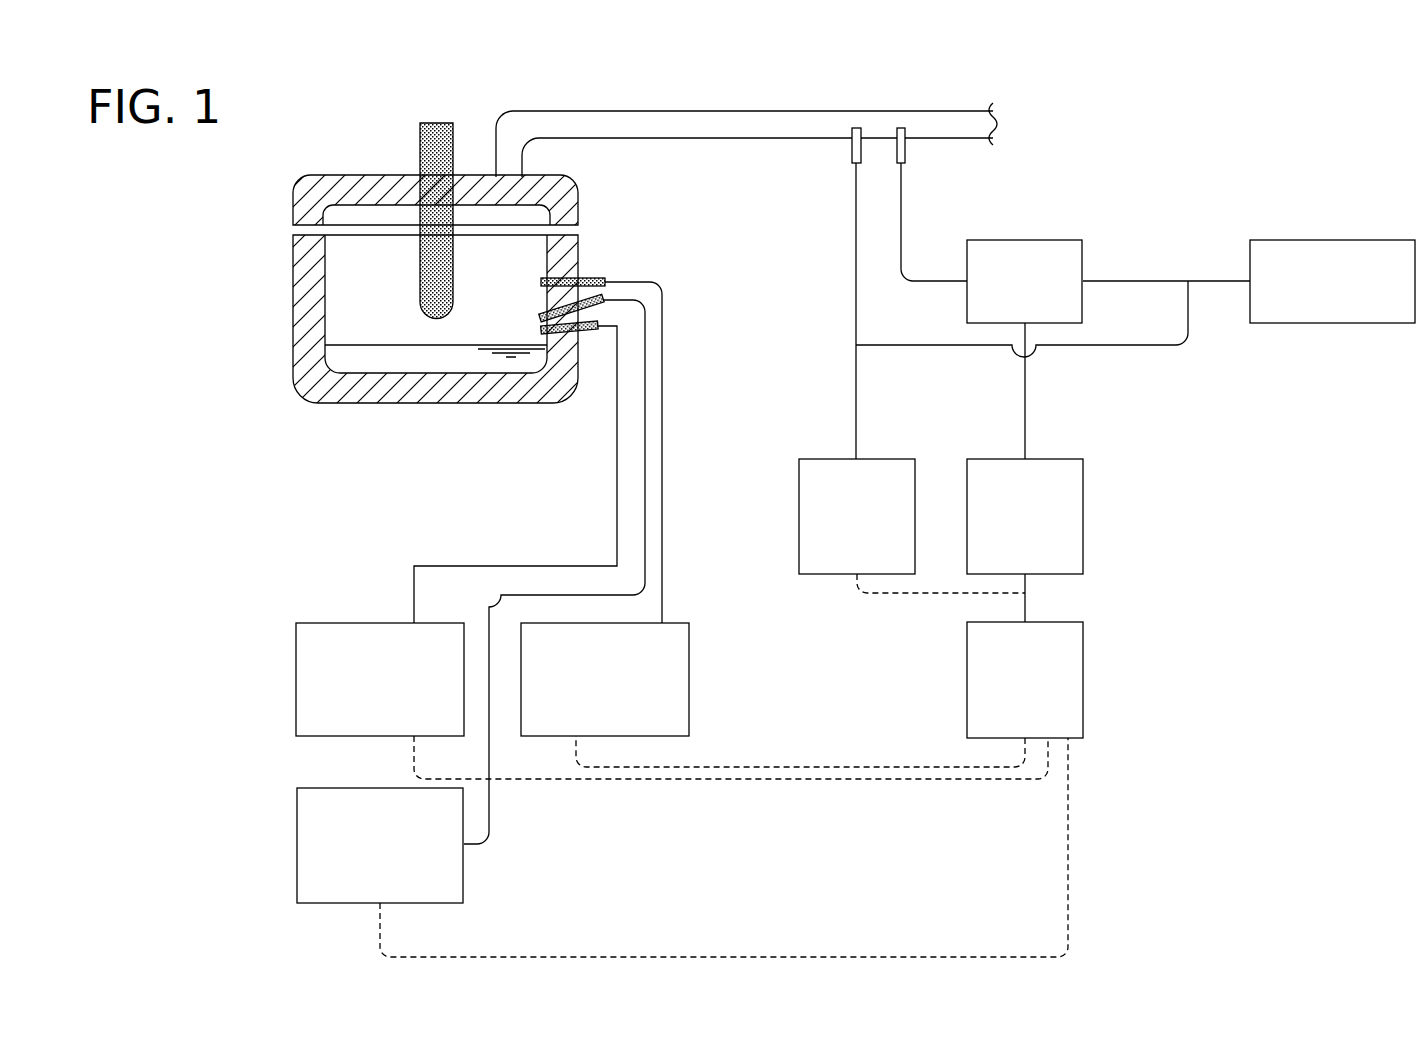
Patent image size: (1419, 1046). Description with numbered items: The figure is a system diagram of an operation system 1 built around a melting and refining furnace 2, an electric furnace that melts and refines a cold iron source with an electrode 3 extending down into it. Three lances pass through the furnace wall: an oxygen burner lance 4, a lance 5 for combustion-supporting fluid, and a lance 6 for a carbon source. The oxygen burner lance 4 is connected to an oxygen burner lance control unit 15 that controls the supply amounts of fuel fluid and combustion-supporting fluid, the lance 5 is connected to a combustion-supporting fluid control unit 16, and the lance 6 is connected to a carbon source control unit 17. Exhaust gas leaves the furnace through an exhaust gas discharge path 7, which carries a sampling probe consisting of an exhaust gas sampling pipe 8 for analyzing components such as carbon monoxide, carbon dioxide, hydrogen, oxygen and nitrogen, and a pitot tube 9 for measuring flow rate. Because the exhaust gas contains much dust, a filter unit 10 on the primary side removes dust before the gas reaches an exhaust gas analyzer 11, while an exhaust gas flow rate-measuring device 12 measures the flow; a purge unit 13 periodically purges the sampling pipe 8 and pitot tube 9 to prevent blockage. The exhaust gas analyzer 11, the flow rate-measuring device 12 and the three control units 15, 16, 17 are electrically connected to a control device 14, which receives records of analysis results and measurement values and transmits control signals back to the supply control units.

The operation system 1 is at (1345, 123).
The melting and refining furnace 2 is at (296, 278).
The electrode 3 is at (425, 137).
The oxygen burner lance 4 is at (540, 316).
The lance 5 is at (541, 282).
The lance 6 is at (540, 333).
The exhaust gas discharge path 7 is at (714, 128).
The exhaust gas sampling pipe 8 is at (901, 128).
The pitot tube 9 is at (856, 128).
The filter unit 10 is at (1018, 253).
The exhaust gas analyzer 11 is at (1083, 517).
The exhaust gas flow rate-measuring device 12 is at (799, 518).
The purge unit 13 is at (1348, 253).
The control device 14 is at (1083, 677).
The oxygen burner lance control unit 15 is at (297, 830).
The combustion-supporting fluid control unit 16 is at (677, 680).
The carbon source control unit 17 is at (318, 623).